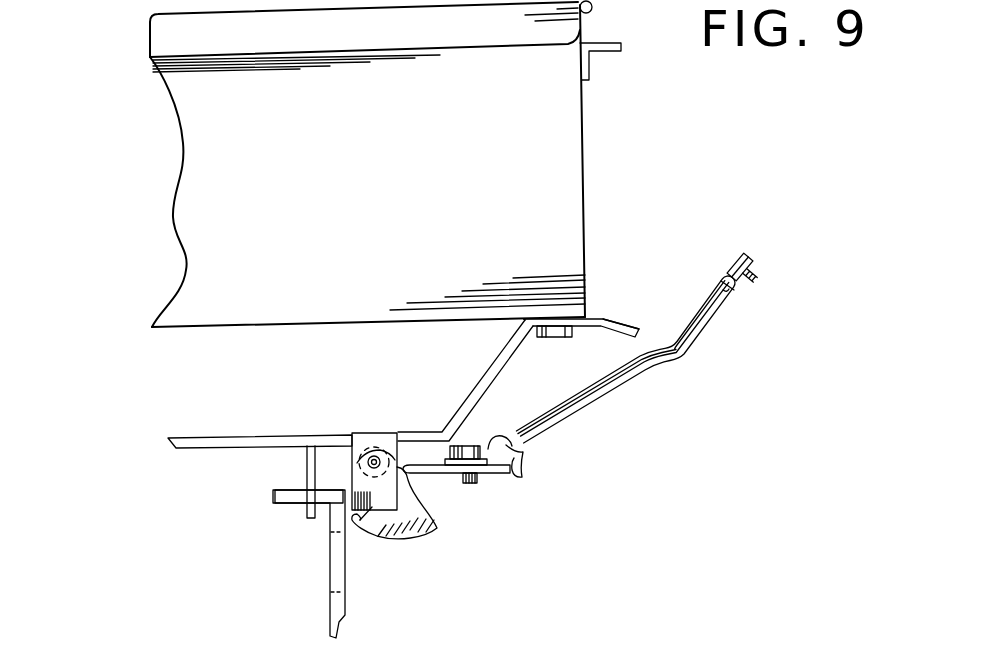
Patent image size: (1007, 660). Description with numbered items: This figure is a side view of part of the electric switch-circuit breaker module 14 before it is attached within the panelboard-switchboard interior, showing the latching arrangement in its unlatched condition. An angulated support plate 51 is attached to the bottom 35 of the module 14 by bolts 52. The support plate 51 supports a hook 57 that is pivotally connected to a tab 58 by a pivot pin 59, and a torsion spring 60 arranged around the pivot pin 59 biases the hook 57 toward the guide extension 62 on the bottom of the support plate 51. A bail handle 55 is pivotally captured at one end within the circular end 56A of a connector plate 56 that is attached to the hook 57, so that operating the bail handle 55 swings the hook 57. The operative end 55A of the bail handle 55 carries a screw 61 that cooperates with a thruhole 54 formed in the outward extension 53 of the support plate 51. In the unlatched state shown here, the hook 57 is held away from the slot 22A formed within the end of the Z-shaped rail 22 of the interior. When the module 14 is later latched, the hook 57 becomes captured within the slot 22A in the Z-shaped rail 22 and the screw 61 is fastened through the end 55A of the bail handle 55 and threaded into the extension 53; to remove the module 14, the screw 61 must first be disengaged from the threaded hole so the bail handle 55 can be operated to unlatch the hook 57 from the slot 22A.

The module 14 is at (78, 229).
The bottom 35 is at (200, 327).
The angulated support plate 51 is at (250, 437).
The bolts 52 is at (546, 337).
The outward extension 53 is at (597, 316).
The thruhole 54 is at (613, 332).
The bail handle 55 is at (703, 385).
The operative end 55A is at (733, 300).
The connector plate 56 is at (493, 473).
The circular end 56A is at (525, 453).
The hook 57 is at (422, 535).
The tab 58 is at (363, 432).
The pivot pin 59 is at (375, 457).
The torsion spring 60 is at (398, 430).
The screw 61 is at (758, 262).
The guide extension 62 is at (307, 465).
The Z-shaped rail 22 is at (347, 607).
The slot 22A is at (327, 557).